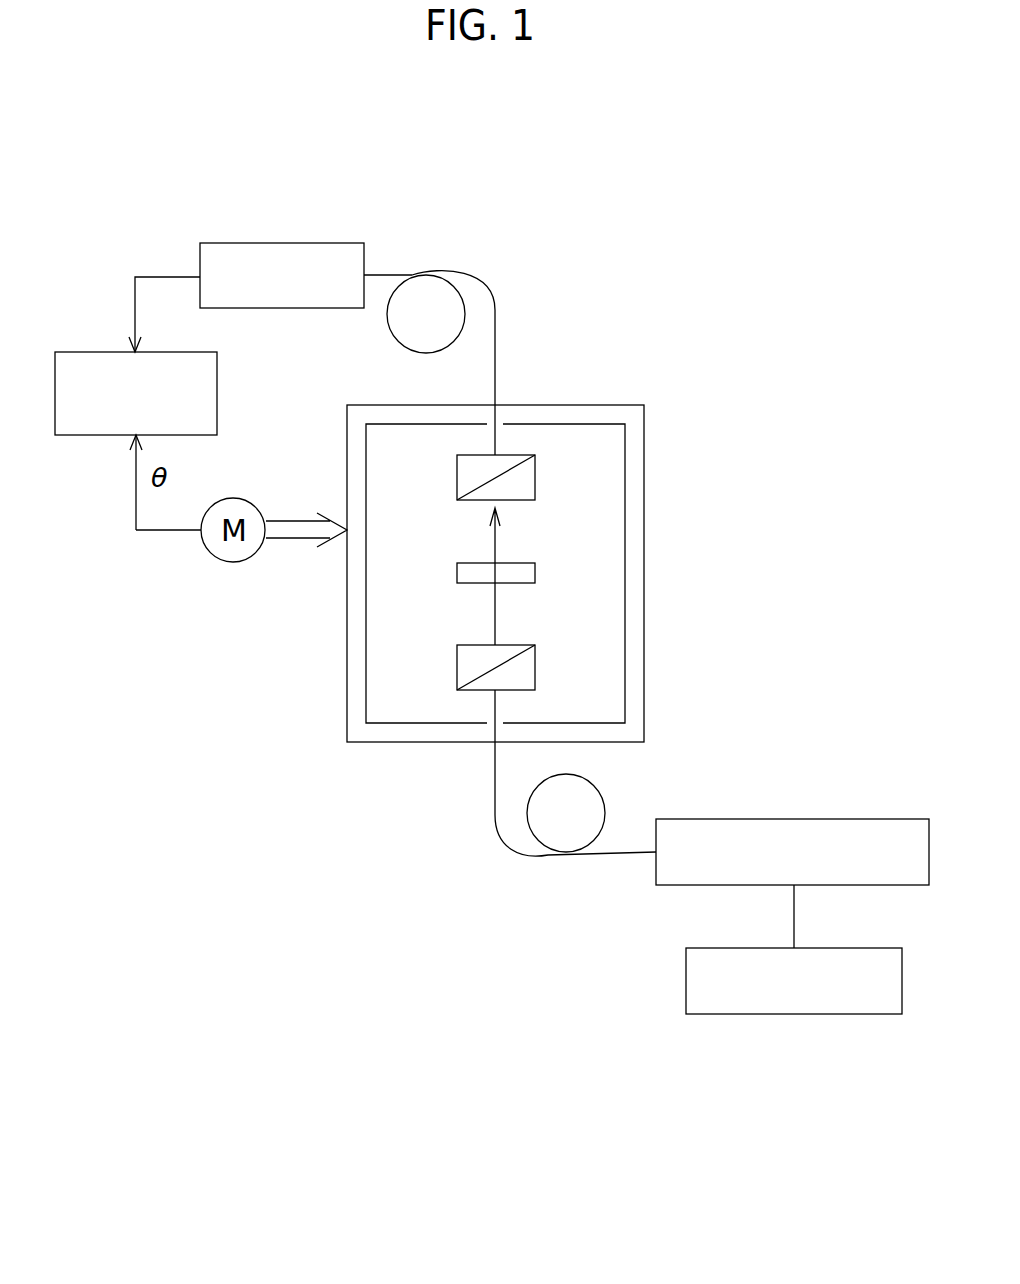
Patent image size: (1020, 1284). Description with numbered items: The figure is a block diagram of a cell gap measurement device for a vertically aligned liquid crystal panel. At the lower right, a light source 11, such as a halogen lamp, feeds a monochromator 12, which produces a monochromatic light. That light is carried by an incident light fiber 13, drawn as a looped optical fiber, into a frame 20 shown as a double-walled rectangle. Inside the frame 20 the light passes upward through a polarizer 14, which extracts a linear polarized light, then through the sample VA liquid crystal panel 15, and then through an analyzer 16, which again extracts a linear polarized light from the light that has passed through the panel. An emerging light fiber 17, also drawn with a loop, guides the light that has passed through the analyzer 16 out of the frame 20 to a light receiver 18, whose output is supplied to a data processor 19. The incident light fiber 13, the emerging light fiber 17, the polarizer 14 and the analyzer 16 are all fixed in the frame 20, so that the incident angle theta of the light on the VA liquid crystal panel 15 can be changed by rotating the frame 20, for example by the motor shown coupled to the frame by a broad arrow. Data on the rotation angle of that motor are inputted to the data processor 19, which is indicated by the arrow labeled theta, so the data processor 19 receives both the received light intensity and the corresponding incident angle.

The light source 11 is at (794, 1014).
The monochromator 12 is at (720, 819).
The incident light fiber 13 is at (507, 842).
The polarizer 14 is at (535, 667).
The VA liquid crystal panel 15 is at (535, 572).
The analyzer 16 is at (535, 478).
The emerging light fiber 17 is at (495, 333).
The light receiver 18 is at (289, 243).
The data processor 19 is at (97, 352).
The frame 20 is at (645, 508).